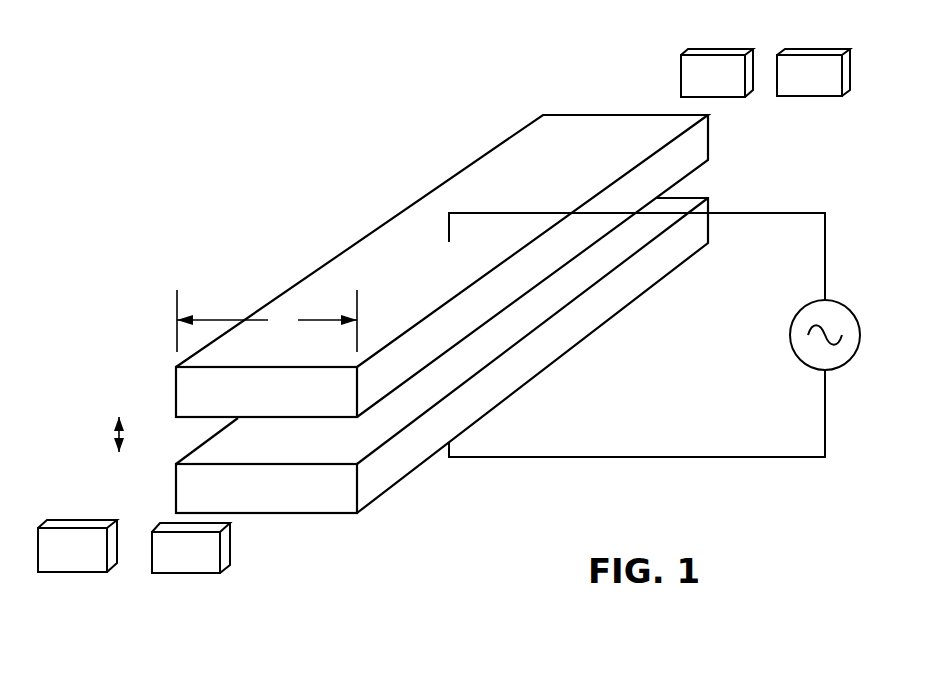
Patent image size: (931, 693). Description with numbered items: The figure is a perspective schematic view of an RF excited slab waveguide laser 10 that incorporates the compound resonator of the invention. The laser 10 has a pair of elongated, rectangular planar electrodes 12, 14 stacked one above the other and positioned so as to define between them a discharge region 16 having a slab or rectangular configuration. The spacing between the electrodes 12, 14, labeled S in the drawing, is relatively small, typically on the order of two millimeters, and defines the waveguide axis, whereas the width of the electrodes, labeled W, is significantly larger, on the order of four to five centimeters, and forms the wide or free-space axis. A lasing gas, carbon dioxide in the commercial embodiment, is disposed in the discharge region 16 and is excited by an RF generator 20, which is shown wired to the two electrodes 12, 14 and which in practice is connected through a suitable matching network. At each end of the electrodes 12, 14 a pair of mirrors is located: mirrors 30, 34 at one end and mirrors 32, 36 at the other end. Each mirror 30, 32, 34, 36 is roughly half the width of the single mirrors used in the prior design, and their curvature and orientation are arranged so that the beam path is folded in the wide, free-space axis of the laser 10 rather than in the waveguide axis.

The laser 10 is at (300, 177).
The electrode 12 is at (190, 393).
The electrode 14 is at (187, 496).
The discharge region 16 is at (352, 441).
The RF generator 20 is at (842, 298).
The mirror 30 is at (73, 562).
The mirror 32 is at (703, 57).
The mirror 34 is at (183, 562).
The mirror 36 is at (808, 62).